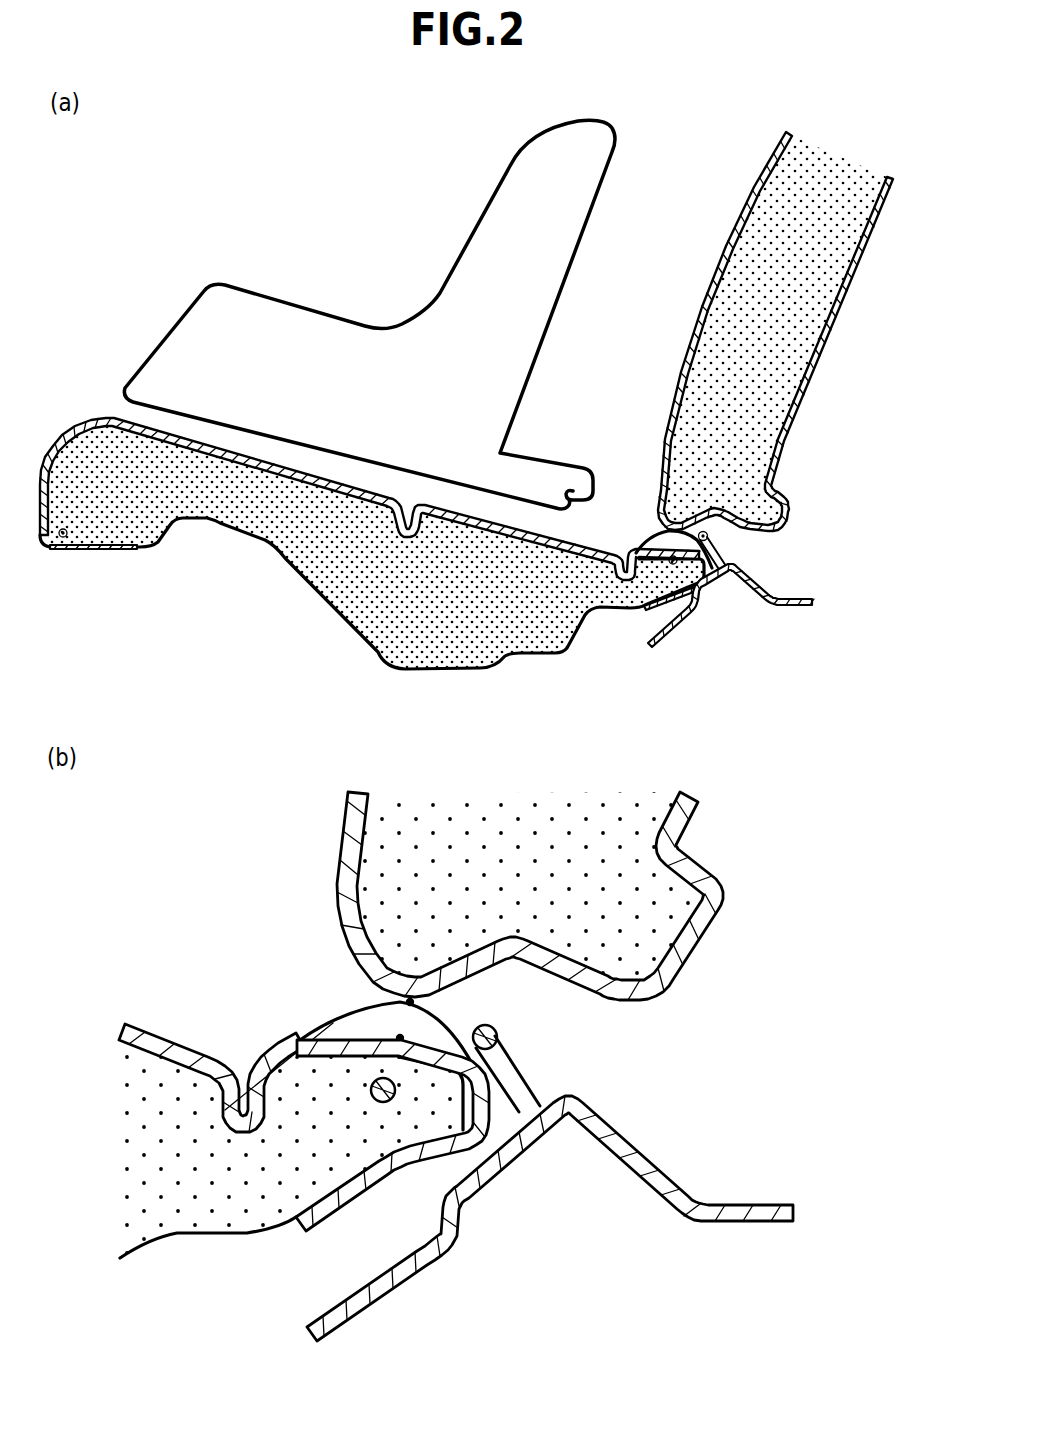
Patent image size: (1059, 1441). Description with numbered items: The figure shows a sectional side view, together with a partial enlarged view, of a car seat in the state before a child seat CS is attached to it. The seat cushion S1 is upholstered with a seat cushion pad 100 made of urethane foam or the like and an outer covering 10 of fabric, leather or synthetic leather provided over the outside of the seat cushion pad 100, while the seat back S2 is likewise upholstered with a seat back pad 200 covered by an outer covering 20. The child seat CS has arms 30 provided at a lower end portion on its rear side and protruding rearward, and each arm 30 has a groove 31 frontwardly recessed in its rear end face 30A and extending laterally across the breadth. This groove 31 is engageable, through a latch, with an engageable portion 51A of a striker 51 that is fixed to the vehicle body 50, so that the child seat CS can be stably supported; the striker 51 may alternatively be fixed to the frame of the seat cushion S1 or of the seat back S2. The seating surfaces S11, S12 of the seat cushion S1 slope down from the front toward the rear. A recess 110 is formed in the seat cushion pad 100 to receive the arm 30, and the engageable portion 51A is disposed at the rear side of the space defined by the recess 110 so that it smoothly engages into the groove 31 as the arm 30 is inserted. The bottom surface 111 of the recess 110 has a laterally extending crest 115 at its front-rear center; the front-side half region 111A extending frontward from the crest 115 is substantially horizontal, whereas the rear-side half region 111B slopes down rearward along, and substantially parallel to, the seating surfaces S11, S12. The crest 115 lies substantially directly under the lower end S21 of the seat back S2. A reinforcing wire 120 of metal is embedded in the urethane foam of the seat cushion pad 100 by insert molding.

The child seat CS is at (504, 173).
The seat cushion S1 is at (90, 417).
The seat back S2 is at (773, 160).
The seating surface S11 is at (379, 778).
The seating surface S12 is at (580, 533).
The lower end of the seat back S21 is at (373, 1007).
The outer covering 10 is at (252, 458).
The outer covering 20 is at (737, 237).
The arm 30 is at (523, 465).
The rear end face 30A is at (593, 490).
The groove 31 is at (590, 505).
The vehicle body 50 is at (763, 587).
The striker 51 is at (727, 557).
The engageable portion 51A is at (708, 535).
The seat cushion pad 100 is at (313, 557).
The recess 110 is at (335, 1028).
The bottom surface 111 is at (550, 1218).
The front-side half region 111A is at (334, 1048).
The rear-side half region 111B is at (483, 1170).
The crest 115 is at (440, 1020).
The reinforcing wire 120 is at (63, 537).
The seat back pad 200 is at (757, 300).